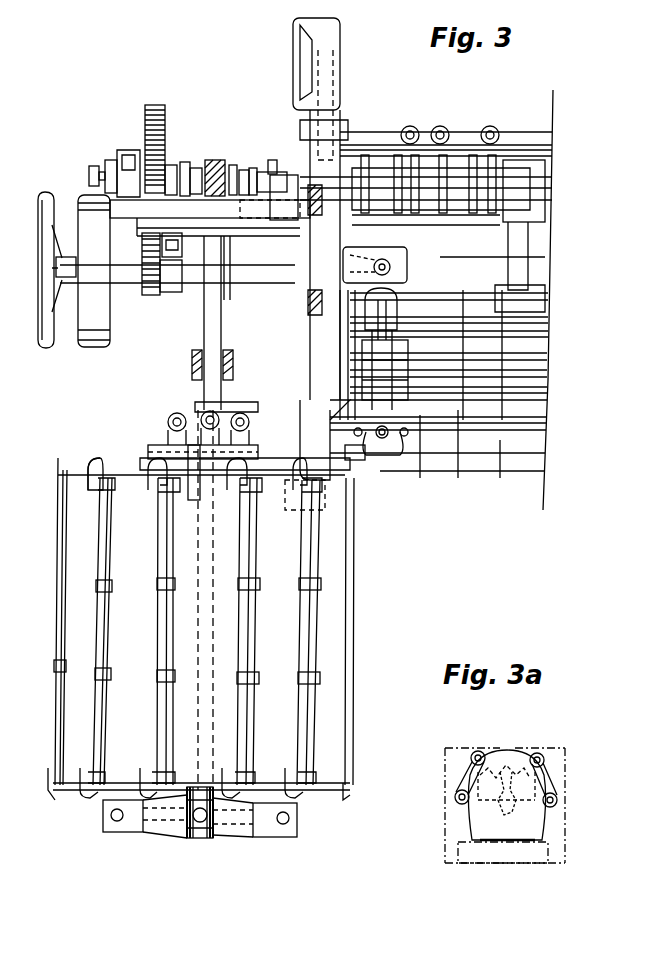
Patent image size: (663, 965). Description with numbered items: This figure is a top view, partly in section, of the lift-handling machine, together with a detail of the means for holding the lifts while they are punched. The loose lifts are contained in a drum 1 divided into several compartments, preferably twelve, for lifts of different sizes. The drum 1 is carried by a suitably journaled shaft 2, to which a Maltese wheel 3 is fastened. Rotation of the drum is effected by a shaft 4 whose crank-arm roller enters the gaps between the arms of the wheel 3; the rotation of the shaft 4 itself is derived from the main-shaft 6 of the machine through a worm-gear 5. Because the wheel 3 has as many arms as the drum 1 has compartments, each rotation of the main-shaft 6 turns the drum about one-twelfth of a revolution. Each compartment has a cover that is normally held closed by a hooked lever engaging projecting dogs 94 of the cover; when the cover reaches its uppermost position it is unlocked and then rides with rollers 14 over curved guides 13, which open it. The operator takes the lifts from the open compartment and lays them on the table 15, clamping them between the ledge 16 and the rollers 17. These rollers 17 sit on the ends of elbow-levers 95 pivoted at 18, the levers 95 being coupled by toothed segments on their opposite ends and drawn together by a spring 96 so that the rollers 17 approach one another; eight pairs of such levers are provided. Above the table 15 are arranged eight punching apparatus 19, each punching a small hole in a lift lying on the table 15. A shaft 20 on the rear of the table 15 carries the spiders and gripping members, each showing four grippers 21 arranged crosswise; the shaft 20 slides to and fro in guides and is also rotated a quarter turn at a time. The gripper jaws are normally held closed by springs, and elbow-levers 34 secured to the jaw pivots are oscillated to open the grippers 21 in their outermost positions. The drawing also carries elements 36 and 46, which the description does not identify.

In FIG. 3, the drum 1 is at (201, 648).
In FIG. 3, the shaft 2 is at (210, 622).
In FIG. 3, the Maltese wheel 3 is at (140, 462).
In FIG. 3, the shaft 4 is at (203, 318).
In FIG. 3, the worm-gear 5 is at (212, 162).
In FIG. 3, the main-shaft 6 is at (236, 168).
In FIG. 3, the curved guides 13 is at (150, 448).
In FIG. 3, the rollers 14 is at (190, 452).
In FIG. 3, the table 15 is at (341, 452).
In FIG. 3A, the table 15 is at (453, 862).
In FIG. 3, the ledge 16 is at (448, 462).
In FIG. 3A, the ledge 16 is at (532, 860).
In FIG. 3, the rollers 17 is at (398, 416).
In FIG. 3A, the rollers 17 is at (478, 751).
In FIG. 3, the pivot 18 is at (385, 440).
In FIG. 3A, the pivot 18 is at (455, 797).
In FIG. 3, the punching apparatus 19 is at (374, 470).
In FIG. 3, the shaft 20 is at (428, 368).
In FIG. 3, the grippers 21 is at (380, 416).
In FIG. 3, the elbow-levers 34 is at (346, 336).
In FIG. 3, the carriage 36 is at (345, 414).
In FIG. 3, the column 46 is at (326, 66).
In FIG. 3, the dogs 94 is at (94, 456).
In FIG. 3A, the elbow-levers 95 is at (465, 778).
In FIG. 3A, the spring 96 is at (507, 752).